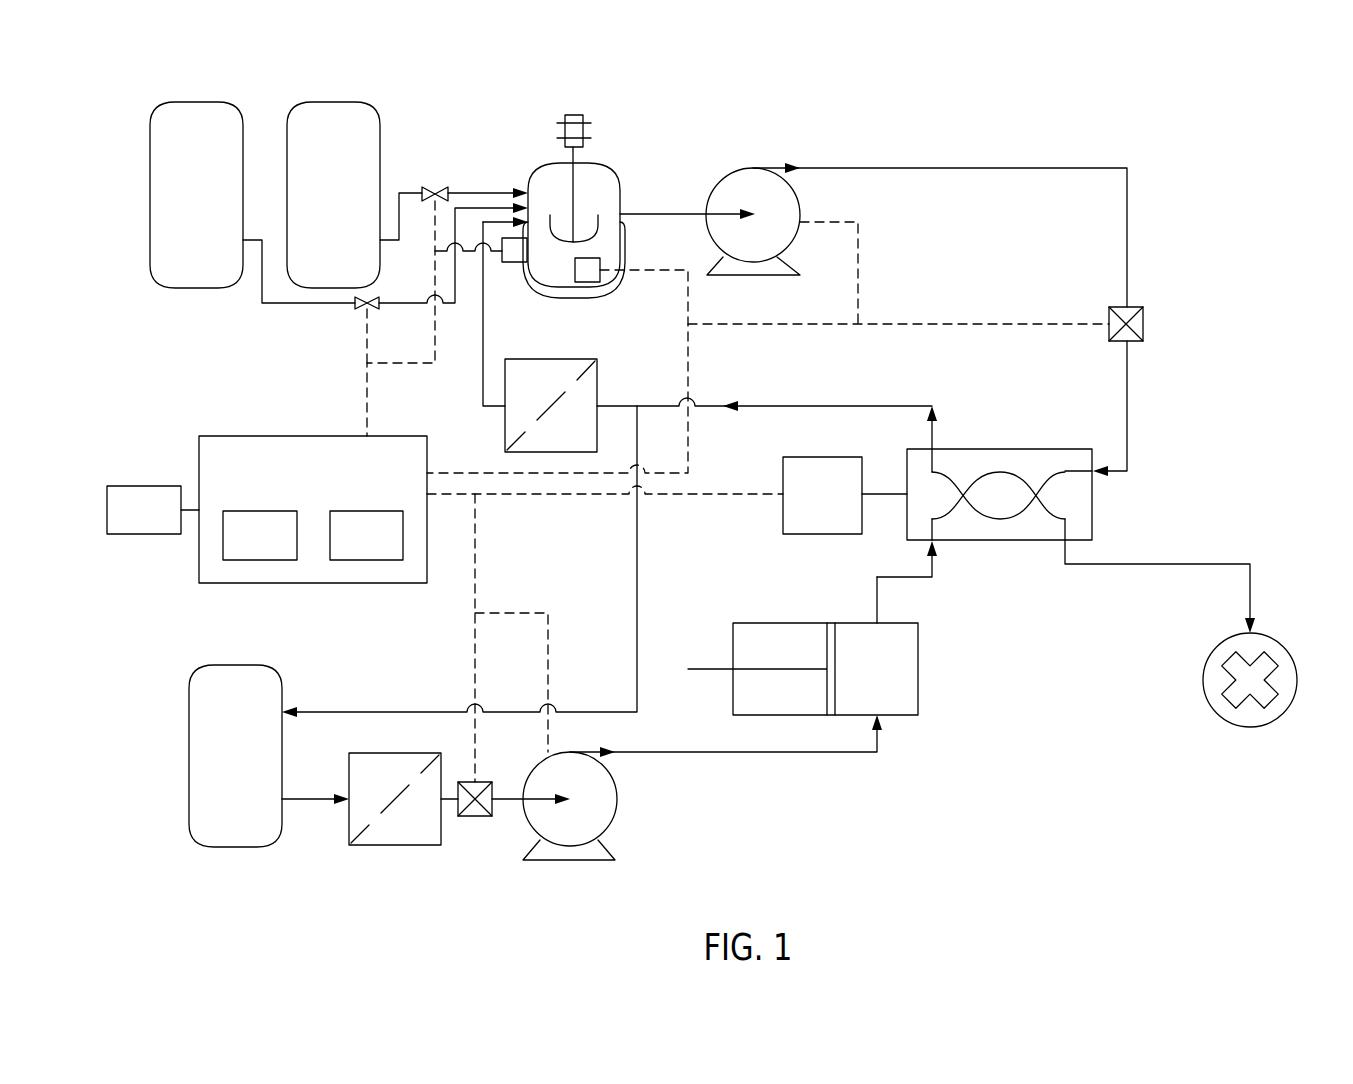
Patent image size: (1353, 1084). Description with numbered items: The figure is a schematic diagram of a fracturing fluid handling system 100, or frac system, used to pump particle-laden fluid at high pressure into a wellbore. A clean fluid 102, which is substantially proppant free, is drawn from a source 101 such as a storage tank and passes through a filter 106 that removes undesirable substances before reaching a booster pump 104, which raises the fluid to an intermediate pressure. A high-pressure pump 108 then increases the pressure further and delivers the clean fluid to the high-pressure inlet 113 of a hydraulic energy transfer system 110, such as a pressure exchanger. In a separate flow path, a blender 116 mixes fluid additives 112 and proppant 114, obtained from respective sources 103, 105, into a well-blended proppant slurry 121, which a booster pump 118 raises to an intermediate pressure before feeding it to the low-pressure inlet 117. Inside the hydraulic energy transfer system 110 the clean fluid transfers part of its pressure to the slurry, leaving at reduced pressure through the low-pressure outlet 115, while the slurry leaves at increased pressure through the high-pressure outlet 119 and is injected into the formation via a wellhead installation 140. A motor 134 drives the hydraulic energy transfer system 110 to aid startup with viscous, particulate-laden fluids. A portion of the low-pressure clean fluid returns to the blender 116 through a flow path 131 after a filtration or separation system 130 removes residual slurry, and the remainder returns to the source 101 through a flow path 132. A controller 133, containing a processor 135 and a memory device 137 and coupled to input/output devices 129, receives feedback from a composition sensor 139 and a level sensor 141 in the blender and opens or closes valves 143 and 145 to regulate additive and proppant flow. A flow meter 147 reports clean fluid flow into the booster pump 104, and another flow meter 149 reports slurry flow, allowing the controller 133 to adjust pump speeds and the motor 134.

The fracturing fluid handling system 100 is at (1214, 166).
The source 101 is at (208, 665).
The clean fluid 102 is at (216, 769).
The source 103 is at (237, 103).
The booster pump 104 is at (615, 812).
The source 105 is at (373, 103).
The filter 106 is at (362, 845).
The high-pressure pump 108 is at (858, 682).
The hydraulic energy transfer system 110 is at (1057, 448).
The fluid additives 112 is at (215, 209).
The high-pressure inlet 113 is at (933, 570).
The proppant 114 is at (352, 209).
The low-pressure outlet 115 is at (933, 437).
The blender 116 is at (620, 168).
The low-pressure inlet 117 is at (1128, 449).
The booster pump 118 is at (722, 178).
The high-pressure outlet 119 is at (1162, 564).
The proppant slurry 121 is at (533, 209).
The input/output devices 129 is at (125, 523).
The filtration or separation system 130 is at (598, 370).
The flow path 131 is at (815, 406).
The flow path 132 is at (637, 577).
The controller 133 is at (293, 472).
The motor 134 is at (803, 507).
The processor 135 is at (241, 548).
The memory device 137 is at (348, 548).
The sensor 139 is at (585, 282).
The wellhead installation 140 is at (1203, 683).
The level sensor 141 is at (508, 263).
The valve 143 is at (354, 304).
The valve 145 is at (437, 187).
The flow meter 147 is at (480, 817).
The flow meter 149 is at (1109, 317).